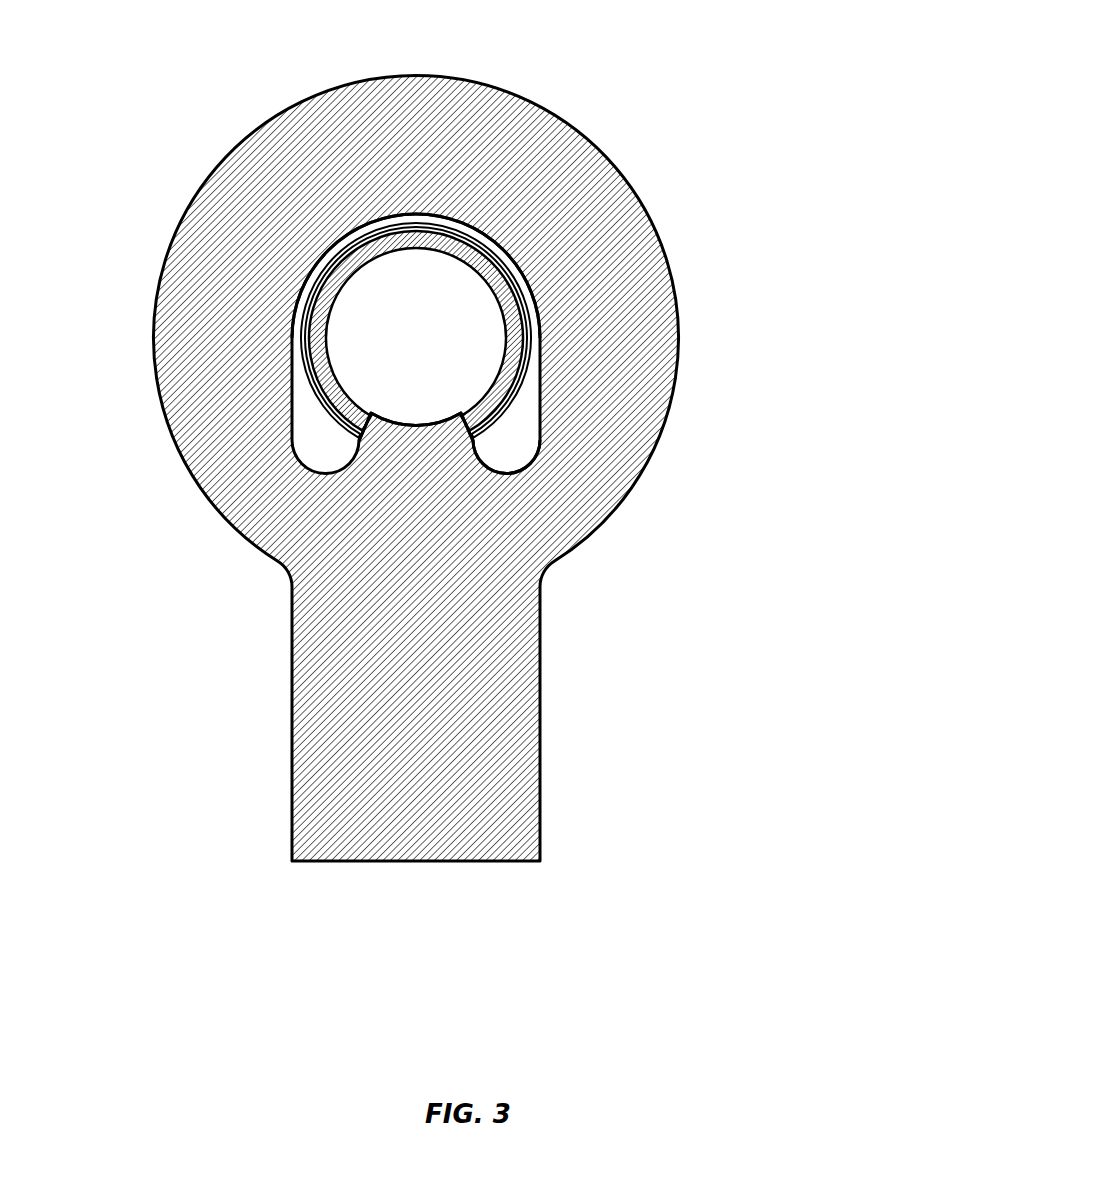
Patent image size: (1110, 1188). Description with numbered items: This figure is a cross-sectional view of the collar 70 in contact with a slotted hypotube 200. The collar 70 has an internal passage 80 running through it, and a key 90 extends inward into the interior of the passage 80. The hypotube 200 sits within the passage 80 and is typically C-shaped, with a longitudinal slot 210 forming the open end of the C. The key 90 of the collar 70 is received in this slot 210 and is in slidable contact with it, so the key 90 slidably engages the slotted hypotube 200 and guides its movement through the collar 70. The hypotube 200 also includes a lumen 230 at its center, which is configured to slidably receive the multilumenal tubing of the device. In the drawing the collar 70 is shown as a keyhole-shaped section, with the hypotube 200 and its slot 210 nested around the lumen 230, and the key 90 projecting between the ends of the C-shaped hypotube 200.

The collar 70 is at (626, 181).
The internal passage 80 is at (327, 435).
The key 90 is at (443, 449).
The slotted hypotube 200 is at (529, 312).
The longitudinal slot 210 is at (473, 417).
The lumen 230 is at (410, 358).